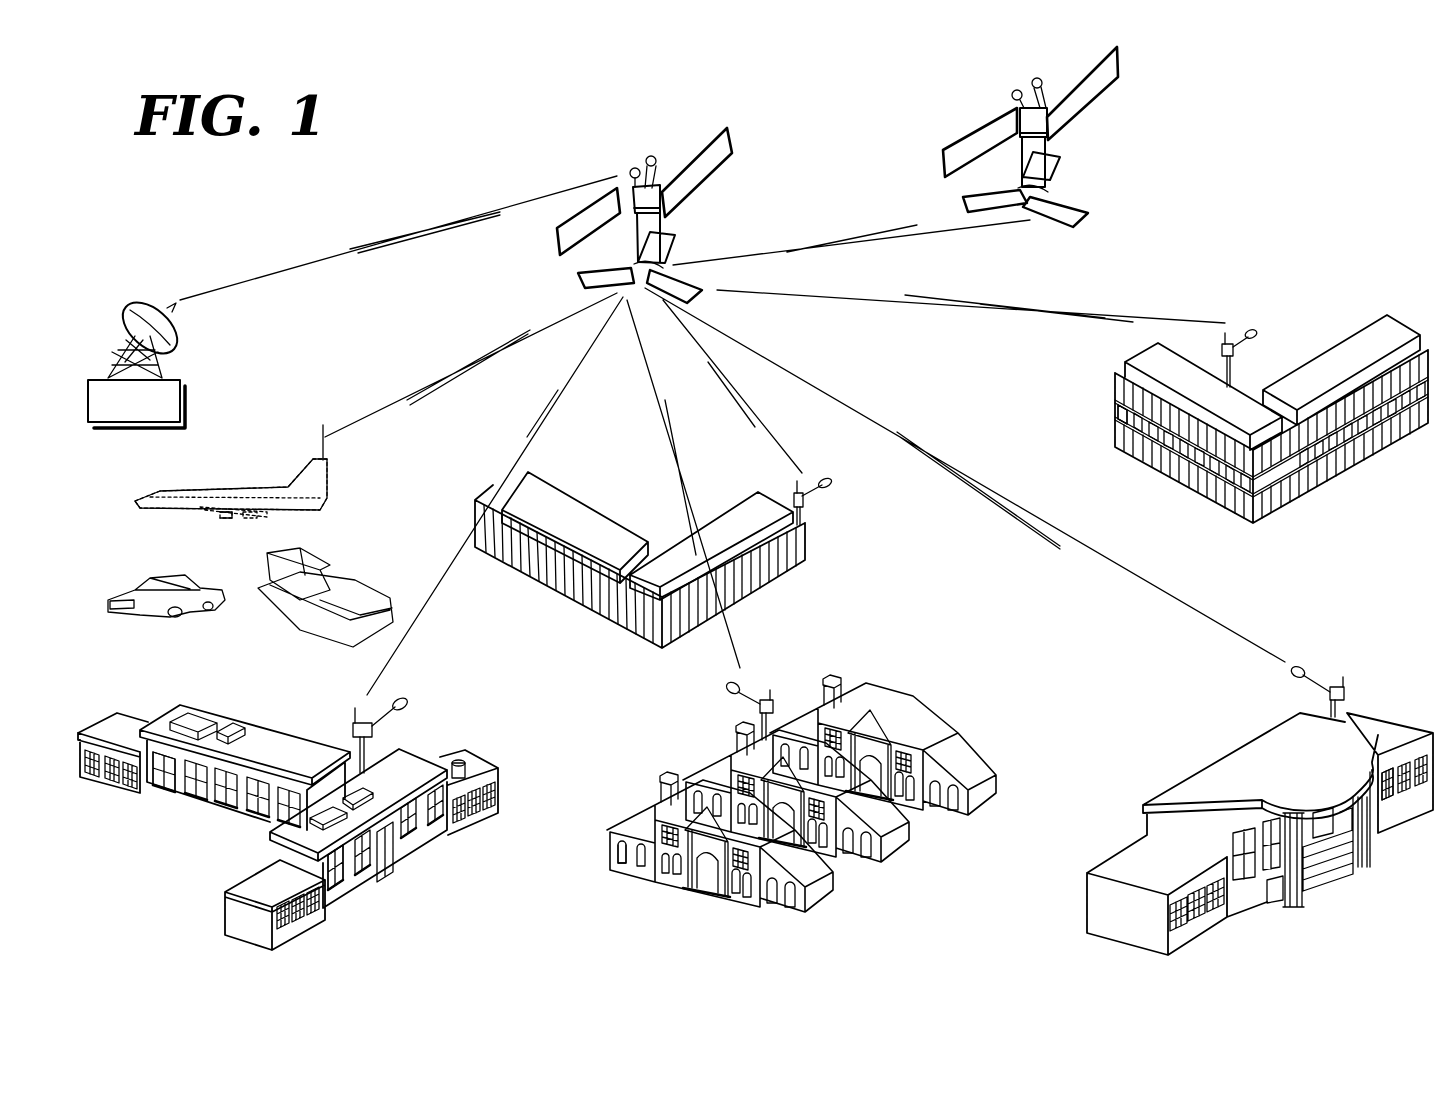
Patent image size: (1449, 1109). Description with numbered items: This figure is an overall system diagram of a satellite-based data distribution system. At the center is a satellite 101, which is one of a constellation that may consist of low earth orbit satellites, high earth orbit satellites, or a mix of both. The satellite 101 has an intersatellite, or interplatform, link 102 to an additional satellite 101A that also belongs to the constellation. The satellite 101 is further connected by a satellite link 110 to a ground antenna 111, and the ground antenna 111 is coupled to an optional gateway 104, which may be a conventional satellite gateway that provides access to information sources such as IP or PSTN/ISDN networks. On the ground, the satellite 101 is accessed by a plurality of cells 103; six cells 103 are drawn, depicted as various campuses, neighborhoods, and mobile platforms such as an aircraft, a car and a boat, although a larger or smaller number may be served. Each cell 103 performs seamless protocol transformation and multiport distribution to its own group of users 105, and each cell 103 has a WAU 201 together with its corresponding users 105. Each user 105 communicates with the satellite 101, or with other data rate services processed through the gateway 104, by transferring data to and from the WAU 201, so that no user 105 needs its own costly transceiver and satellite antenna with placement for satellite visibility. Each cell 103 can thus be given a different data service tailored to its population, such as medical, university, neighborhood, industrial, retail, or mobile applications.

The satellite 101 is at (697, 177).
The additional satellite 101A is at (1108, 78).
The intersatellite link 102 is at (845, 240).
The cell 103 is at (347, 530).
The gateway 104 is at (186, 400).
The user 105 is at (200, 508).
The satellite link 110 is at (386, 240).
The ground antenna 111 is at (144, 300).
The WAU 201 is at (320, 433).